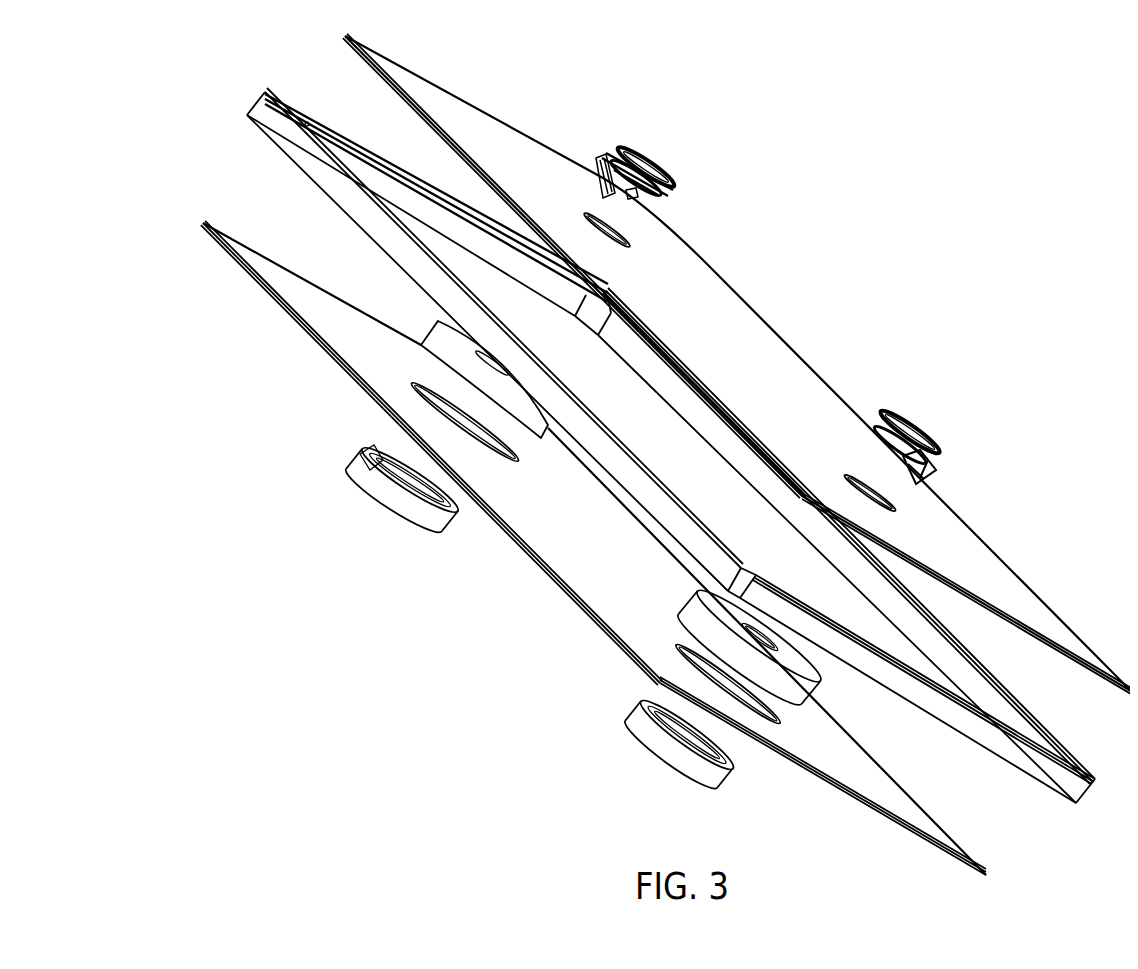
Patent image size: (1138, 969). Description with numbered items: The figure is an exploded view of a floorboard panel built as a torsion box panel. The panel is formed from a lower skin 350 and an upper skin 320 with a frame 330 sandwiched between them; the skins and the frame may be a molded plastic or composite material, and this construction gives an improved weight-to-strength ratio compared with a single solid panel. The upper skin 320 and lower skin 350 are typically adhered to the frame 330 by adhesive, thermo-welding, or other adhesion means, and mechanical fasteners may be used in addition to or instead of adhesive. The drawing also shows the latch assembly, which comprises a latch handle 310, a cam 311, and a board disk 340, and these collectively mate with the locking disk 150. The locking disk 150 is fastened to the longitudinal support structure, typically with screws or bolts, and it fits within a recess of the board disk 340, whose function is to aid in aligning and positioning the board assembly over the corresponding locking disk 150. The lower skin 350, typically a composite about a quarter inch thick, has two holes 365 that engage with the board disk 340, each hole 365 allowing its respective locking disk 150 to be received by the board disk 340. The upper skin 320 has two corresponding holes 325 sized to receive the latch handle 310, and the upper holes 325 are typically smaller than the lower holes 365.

The locking disk 150 is at (413, 520).
The latch handle 310 is at (670, 178).
The cam 311 is at (588, 153).
The upper skin 320 is at (393, 86).
The upper holes 325 is at (837, 467).
The frame 330 is at (285, 157).
The board disk 340 is at (430, 320).
The lower skin 350 is at (245, 268).
The holes 365 is at (670, 637).